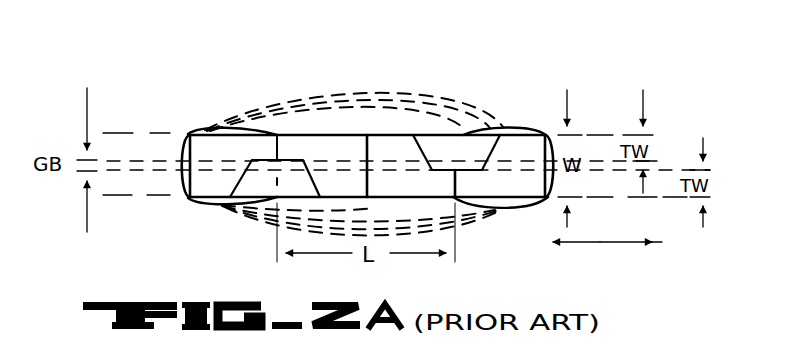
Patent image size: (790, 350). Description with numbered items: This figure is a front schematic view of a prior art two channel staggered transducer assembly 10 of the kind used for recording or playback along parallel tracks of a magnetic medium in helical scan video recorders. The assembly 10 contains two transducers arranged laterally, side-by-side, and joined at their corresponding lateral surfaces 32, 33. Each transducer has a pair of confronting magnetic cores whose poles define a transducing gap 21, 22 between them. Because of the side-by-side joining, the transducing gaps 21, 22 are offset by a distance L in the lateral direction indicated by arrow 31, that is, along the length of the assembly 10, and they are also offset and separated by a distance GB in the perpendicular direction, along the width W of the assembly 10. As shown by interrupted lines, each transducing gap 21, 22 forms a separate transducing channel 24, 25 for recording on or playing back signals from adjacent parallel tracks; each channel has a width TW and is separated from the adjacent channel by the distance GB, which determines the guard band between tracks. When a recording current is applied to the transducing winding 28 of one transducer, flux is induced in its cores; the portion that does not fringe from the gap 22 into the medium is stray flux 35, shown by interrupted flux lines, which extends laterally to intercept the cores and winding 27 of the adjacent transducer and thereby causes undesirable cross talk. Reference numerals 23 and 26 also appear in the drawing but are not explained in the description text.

The two channel staggered transducer assembly 10 is at (217, 57).
The transducing gap 21 is at (455, 182).
The transducing gap 22 is at (273, 148).
The lower bulge 23 is at (202, 186).
The transducing channel 24 is at (120, 147).
The transducing channel 25 is at (120, 185).
The gap region 26 is at (145, 160).
The transducing winding 27 is at (525, 131).
The transducing winding 28 is at (205, 132).
The lateral direction arrow 31 is at (607, 229).
The lateral surface 32 is at (298, 168).
The lateral surface 33 is at (288, 168).
The stray flux 35 is at (406, 103).